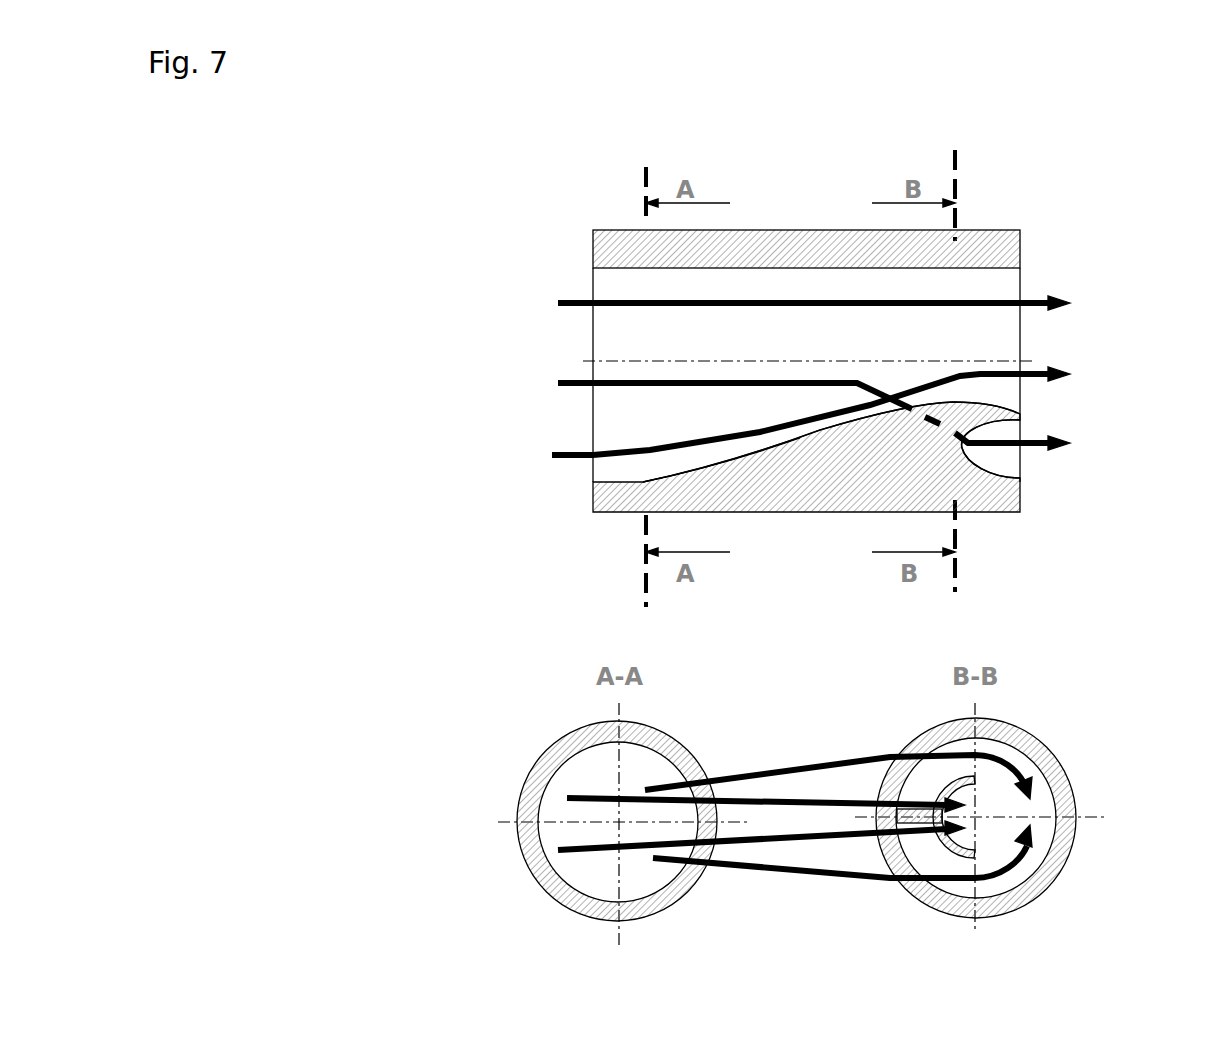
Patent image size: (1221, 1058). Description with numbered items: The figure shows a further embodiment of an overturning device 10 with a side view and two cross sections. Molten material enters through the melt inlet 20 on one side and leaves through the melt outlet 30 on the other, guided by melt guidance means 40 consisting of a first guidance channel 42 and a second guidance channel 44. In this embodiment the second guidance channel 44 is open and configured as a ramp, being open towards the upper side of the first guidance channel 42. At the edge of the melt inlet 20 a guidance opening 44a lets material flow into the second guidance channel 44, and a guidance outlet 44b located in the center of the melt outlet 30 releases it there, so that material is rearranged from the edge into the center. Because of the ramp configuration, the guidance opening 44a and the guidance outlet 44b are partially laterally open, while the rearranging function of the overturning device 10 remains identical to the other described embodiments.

The overturning device 10 is at (601, 526).
The melt inlet 20 is at (522, 408).
The melt outlet 30 is at (1104, 413).
The melt guidance means 40 is at (830, 279).
The first guidance channel 42 is at (766, 287).
The second guidance channel 44 is at (741, 457).
The guidance opening 44a is at (575, 468).
The guidance outlet 44b is at (1000, 346).